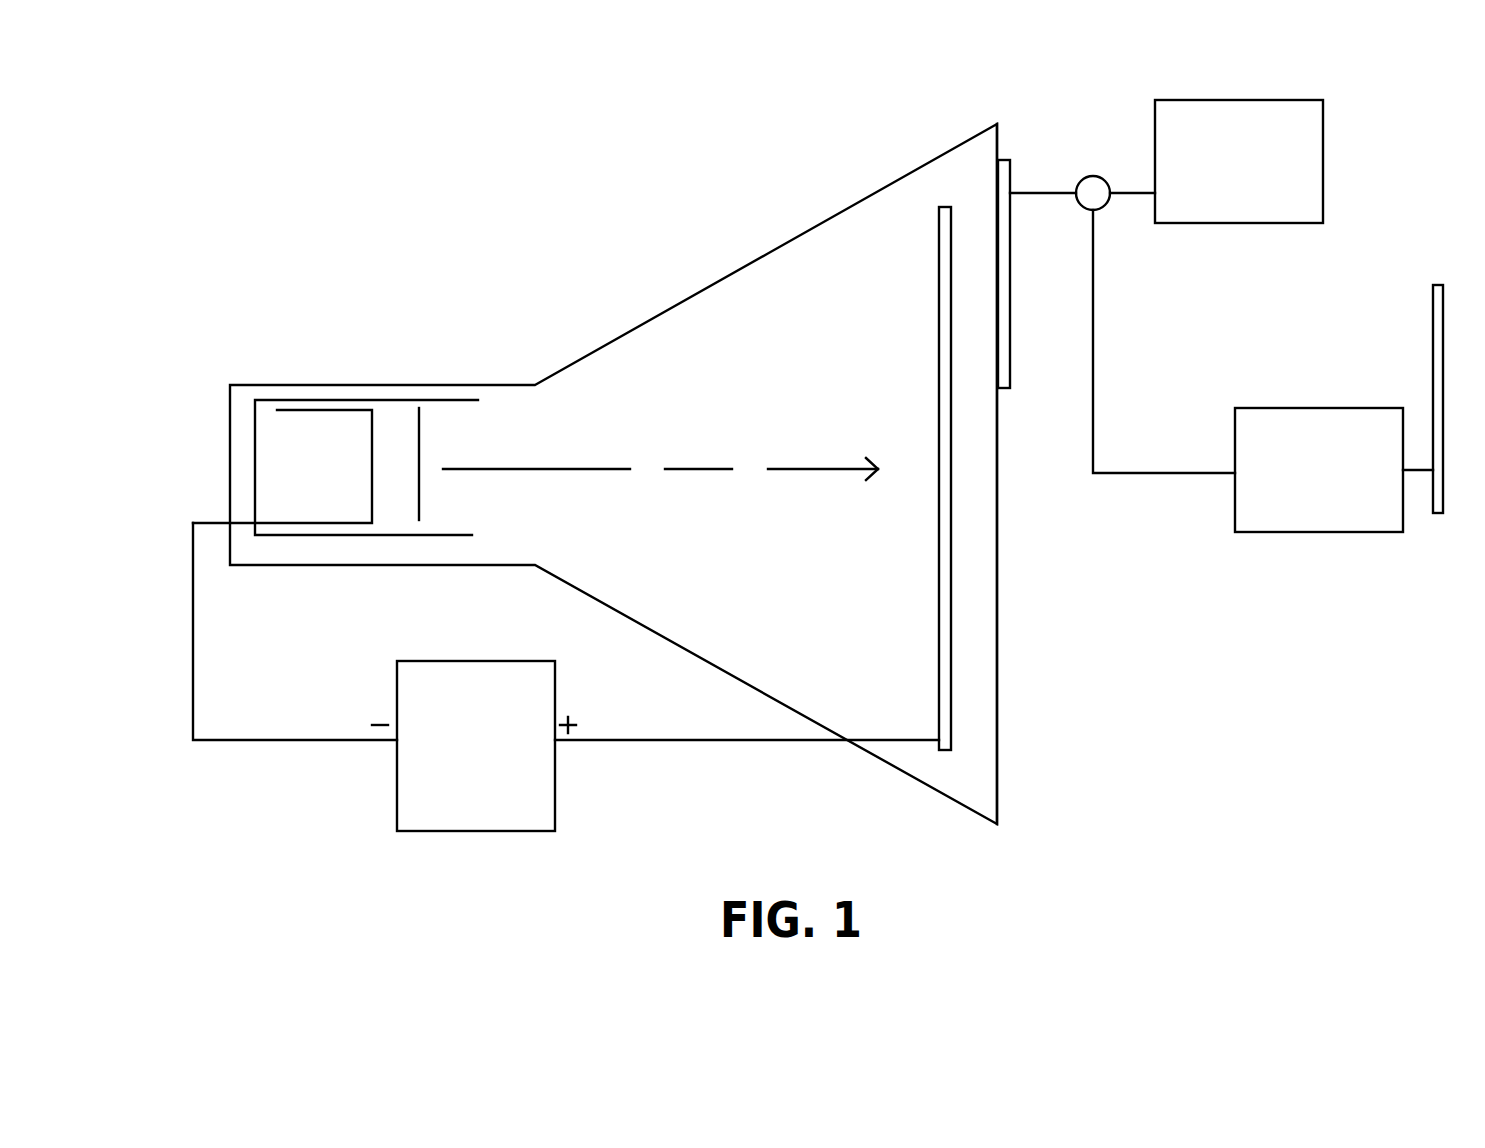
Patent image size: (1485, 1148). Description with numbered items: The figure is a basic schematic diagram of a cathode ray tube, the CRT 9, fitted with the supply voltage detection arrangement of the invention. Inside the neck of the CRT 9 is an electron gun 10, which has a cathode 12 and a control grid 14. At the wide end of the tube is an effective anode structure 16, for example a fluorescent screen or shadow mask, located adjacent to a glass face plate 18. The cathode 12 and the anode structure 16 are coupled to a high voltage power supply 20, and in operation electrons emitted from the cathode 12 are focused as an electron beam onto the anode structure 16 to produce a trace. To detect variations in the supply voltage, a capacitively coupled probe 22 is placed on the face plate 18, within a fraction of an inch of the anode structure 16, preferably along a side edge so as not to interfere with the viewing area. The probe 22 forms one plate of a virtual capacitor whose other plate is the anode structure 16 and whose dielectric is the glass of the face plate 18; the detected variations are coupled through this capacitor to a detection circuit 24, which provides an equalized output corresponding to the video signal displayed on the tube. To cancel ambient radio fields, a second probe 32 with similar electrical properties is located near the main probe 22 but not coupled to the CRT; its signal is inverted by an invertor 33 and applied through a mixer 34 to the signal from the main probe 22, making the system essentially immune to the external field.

The cathode ray tube 9 is at (692, 293).
The electron gun 10 is at (343, 398).
The cathode 12 is at (372, 495).
The control grid 14 is at (419, 457).
The anode structure 16 is at (939, 327).
The face plate 18 is at (997, 697).
The high voltage power supply 20 is at (566, 677).
The probe 22 is at (1010, 333).
The detection circuit 24 is at (1239, 161).
The second probe 32 is at (1433, 355).
The invertor 33 is at (1290, 532).
The mixer 34 is at (1088, 177).